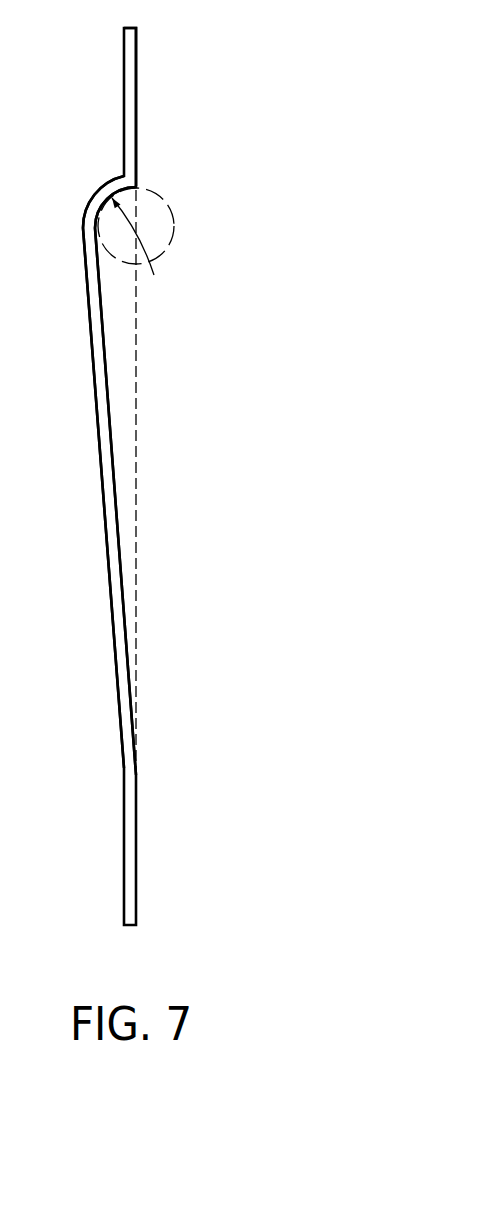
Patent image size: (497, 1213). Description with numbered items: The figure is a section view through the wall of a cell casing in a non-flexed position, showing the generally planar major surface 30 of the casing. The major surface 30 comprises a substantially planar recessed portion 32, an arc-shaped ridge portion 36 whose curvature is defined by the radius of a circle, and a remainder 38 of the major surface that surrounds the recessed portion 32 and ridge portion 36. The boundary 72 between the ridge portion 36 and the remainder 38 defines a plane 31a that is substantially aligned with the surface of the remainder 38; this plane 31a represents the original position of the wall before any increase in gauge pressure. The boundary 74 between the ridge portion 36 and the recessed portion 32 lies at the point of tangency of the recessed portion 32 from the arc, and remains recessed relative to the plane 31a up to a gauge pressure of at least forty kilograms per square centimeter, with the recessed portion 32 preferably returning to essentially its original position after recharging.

The major surface 30 is at (127, 592).
The plane 31a is at (137, 395).
The recessed portion 32 is at (103, 330).
The ridge portion 36 is at (140, 251).
The remainder of major surface 38 is at (137, 84).
The boundary between ridge portions and remainder 72 is at (140, 189).
The boundary between ridge portions and recessed portion 74 is at (97, 228).